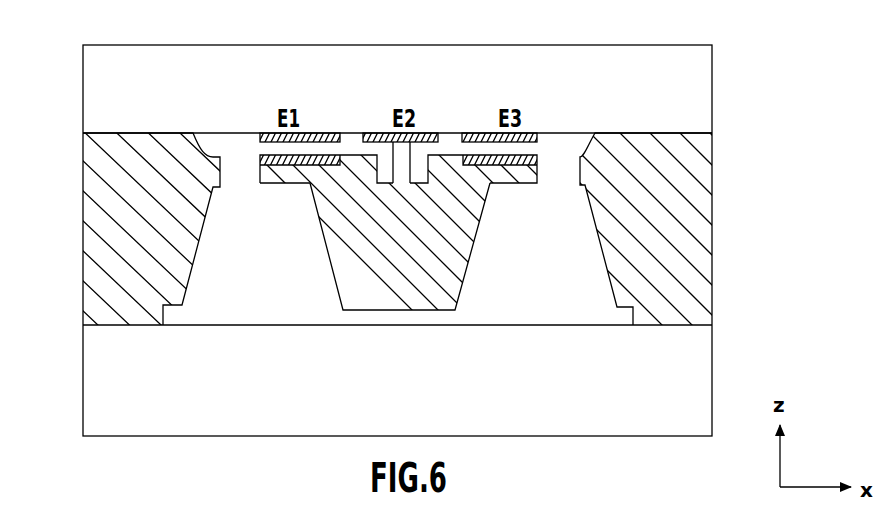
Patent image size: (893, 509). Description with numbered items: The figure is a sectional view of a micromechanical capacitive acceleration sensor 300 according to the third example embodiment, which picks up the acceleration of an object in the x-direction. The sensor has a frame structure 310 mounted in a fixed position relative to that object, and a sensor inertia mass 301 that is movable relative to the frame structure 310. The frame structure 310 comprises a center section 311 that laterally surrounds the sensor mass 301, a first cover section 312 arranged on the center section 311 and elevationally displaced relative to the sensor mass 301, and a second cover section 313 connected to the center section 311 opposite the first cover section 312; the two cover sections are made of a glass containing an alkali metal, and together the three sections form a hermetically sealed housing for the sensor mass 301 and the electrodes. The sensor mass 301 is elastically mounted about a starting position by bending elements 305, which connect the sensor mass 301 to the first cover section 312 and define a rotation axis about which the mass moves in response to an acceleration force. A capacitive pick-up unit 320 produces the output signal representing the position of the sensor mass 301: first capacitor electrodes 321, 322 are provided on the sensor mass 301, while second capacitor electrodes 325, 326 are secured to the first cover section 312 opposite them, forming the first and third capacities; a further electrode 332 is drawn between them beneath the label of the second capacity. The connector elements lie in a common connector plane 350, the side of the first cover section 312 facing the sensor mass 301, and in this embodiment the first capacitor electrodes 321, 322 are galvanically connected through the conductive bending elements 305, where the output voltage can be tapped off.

The acceleration sensor 300 is at (58, 324).
The sensor inertia mass 301 is at (353, 260).
The bending elements 305 is at (395, 158).
The frame structure 310 is at (756, 152).
The center section 311 is at (100, 212).
The first cover section 312 is at (690, 90).
The second cover section 313 is at (690, 362).
The capacitive pick-up unit 320 is at (257, 103).
The first capacitor electrode 321 is at (260, 153).
The first capacitor electrode 322 is at (537, 157).
The second capacitor electrode 325 is at (315, 133).
The second capacitor electrode 326 is at (468, 133).
The electrode E2 332 is at (377, 133).
The common connector plane 350 is at (594, 132).